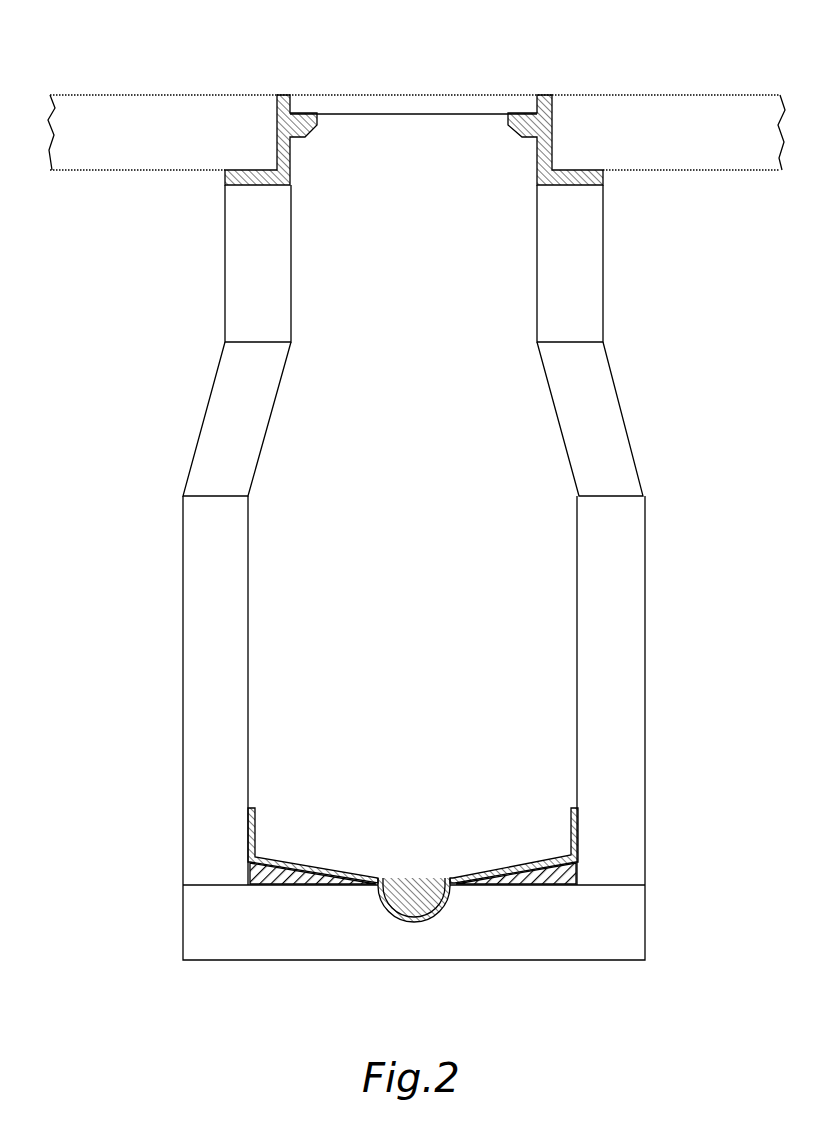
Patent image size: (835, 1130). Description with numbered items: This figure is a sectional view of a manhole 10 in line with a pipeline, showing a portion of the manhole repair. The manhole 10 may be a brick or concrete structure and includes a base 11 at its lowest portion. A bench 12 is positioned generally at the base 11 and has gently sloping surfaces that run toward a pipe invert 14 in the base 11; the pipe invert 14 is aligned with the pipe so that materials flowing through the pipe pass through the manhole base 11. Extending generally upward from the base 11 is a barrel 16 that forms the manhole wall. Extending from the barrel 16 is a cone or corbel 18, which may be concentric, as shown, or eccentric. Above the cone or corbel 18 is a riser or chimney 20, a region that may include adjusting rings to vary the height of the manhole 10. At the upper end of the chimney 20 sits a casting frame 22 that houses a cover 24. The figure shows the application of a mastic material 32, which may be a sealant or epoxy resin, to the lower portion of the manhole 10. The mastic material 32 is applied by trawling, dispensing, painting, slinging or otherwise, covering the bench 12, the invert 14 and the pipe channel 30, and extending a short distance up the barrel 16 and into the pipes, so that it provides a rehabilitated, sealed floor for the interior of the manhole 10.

The manhole 10 is at (580, 44).
The base 11 is at (633, 918).
The bench 12 is at (288, 870).
The pipe invert 14 is at (413, 922).
The barrel 16 is at (636, 640).
The cone or corbel 18 is at (610, 400).
The riser or chimney 20 is at (589, 260).
The casting frame 22 is at (601, 177).
The cover 24 is at (323, 103).
The pipe channel 30 is at (385, 896).
The mastic material 32 is at (540, 858).